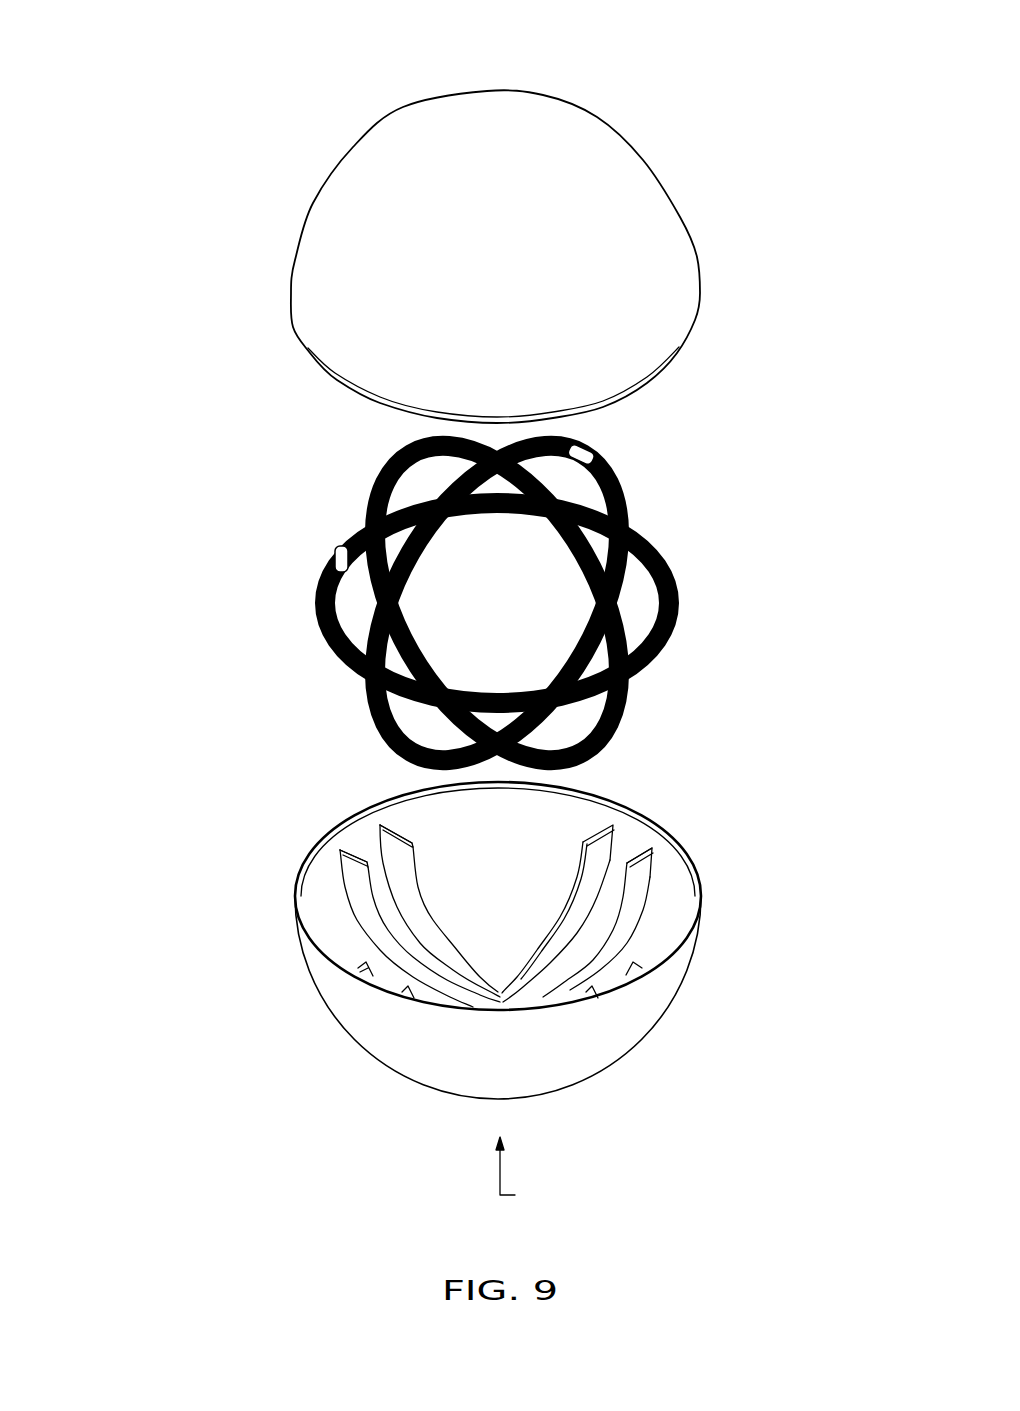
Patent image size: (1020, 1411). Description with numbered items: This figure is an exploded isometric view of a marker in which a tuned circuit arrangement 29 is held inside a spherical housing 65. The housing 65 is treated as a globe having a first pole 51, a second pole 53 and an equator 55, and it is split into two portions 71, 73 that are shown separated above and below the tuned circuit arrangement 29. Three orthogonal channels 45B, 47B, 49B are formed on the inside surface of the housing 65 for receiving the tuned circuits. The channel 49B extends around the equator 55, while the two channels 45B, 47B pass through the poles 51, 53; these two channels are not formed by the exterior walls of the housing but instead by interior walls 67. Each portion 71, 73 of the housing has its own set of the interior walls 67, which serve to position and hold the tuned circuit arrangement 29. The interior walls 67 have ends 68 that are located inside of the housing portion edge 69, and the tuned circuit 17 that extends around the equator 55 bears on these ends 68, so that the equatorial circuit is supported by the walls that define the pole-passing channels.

The first pole 51 is at (417, 213).
The housing portion 73 is at (478, 125).
The spherical housing 65 is at (496, 577).
The tuned circuit arrangement 29 is at (591, 603).
The tuned circuit 17 is at (673, 633).
The ends 68 is at (378, 823).
The channel 49B is at (625, 820).
The housing portion edge 69 is at (702, 893).
The channel 47B is at (383, 885).
The channel 45B is at (607, 907).
The equator 55 is at (505, 966).
The housing portion 71 is at (505, 966).
The interior walls 67 is at (498, 925).
The second pole 53 is at (528, 1174).